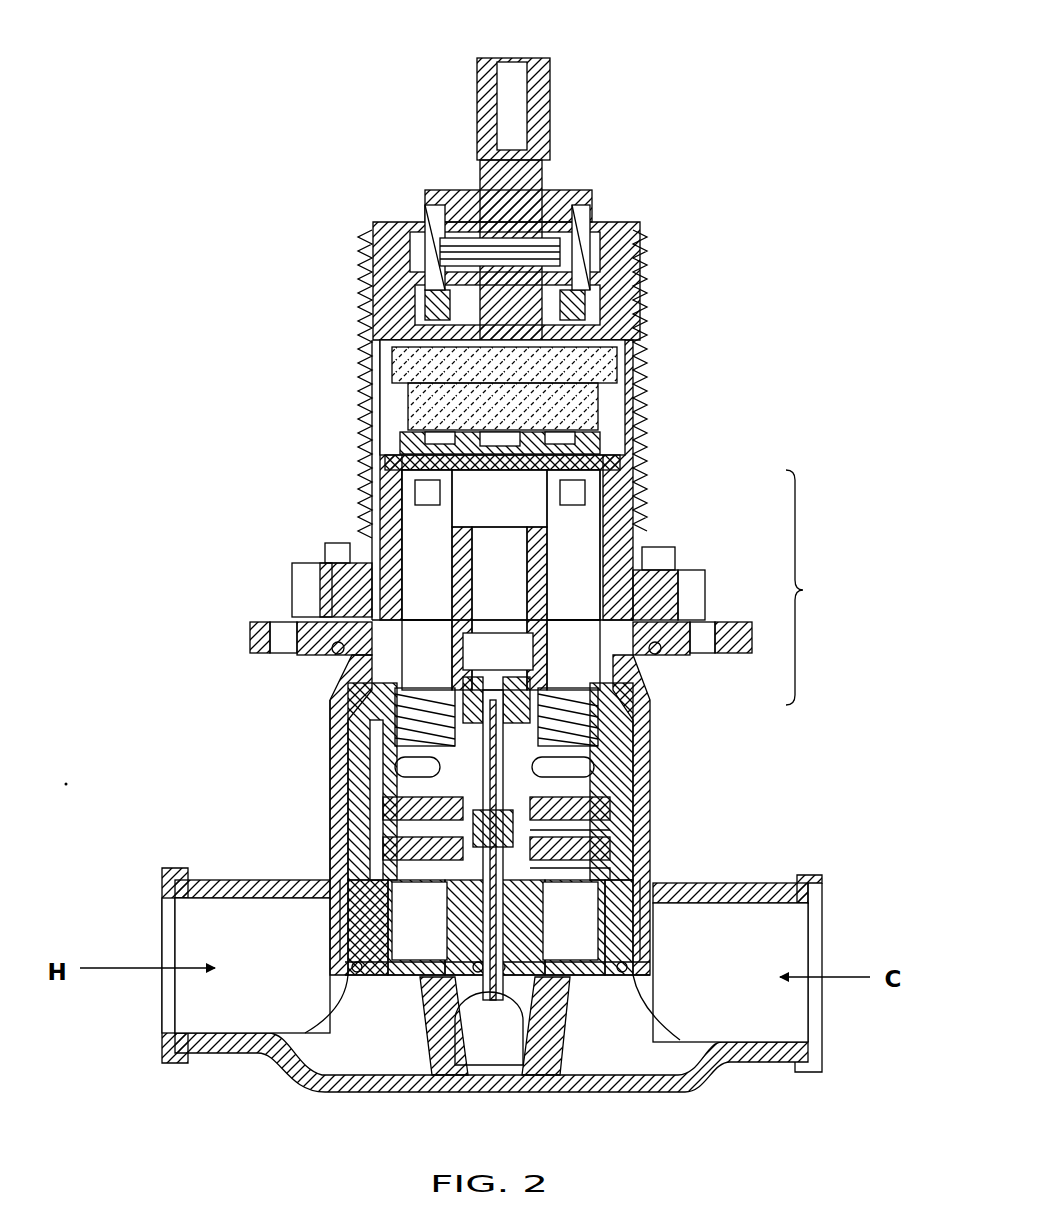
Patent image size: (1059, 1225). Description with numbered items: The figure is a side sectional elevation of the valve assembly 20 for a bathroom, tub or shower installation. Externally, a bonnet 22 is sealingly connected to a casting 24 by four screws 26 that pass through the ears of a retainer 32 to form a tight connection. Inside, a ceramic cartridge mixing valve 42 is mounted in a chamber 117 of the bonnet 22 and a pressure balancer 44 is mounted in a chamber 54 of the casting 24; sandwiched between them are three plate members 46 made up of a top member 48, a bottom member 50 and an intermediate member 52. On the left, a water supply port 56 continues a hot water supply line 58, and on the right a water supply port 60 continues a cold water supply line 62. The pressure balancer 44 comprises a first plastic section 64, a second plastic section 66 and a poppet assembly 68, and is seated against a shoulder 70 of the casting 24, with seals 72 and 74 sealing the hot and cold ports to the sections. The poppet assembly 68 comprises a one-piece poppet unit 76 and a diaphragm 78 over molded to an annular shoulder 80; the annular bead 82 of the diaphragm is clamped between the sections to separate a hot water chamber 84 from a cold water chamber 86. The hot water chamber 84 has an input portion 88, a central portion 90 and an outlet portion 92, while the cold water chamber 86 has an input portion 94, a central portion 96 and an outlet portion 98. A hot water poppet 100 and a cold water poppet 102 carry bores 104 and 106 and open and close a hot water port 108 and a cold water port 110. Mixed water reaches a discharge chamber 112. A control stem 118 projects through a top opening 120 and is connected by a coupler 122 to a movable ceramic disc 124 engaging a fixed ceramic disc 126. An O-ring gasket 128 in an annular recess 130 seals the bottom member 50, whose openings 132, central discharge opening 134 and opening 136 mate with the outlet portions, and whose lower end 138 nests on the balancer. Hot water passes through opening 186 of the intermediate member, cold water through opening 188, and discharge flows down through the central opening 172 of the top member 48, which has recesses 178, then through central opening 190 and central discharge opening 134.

The valve assembly 20 is at (655, 116).
The bonnet 22 is at (690, 605).
The casting 24 is at (692, 1096).
The screws 26 is at (335, 550).
The retainer 32 is at (293, 578).
The mixing valve 42 is at (636, 292).
The pressure balancer 44 is at (652, 797).
The plate members 46 is at (810, 587).
The top member 48 is at (637, 493).
The bottom member 50 is at (655, 692).
The intermediate member 52 is at (645, 548).
The chamber 54 is at (612, 855).
The water supply port 56 is at (366, 1051).
The water supply line 58 is at (168, 1046).
The water supply port 60 is at (618, 1051).
The water supply line 62 is at (824, 1055).
The first plastic section 64 is at (332, 775).
The second plastic section 66 is at (642, 718).
The poppet assembly 68 is at (612, 820).
The shoulder 70 is at (358, 982).
The seal 72 is at (335, 965).
The seal 74 is at (655, 975).
The poppet unit 76 is at (575, 995).
The diaphragm 78 is at (470, 1000).
The annular shoulder 80 is at (338, 927).
The annular bead 82 is at (545, 1012).
The hot water chamber 84 is at (407, 933).
The cold water chamber 86 is at (547, 933).
The input portion 88 is at (352, 963).
The central portion 90 is at (375, 830).
The outlet portion 92 is at (409, 671).
The input portion 94 is at (640, 945).
The central portion 96 is at (612, 866).
The outlet portion 98 is at (556, 671).
The hot water poppet 100 is at (384, 855).
The cold water poppet 102 is at (656, 918).
The bore 104 is at (386, 820).
The bore 106 is at (612, 832).
The hot water port 108 is at (400, 790).
The cold water port 110 is at (608, 777).
The discharge chamber 112 is at (470, 1063).
The chamber 117 is at (642, 325).
The control stem 118 is at (550, 115).
The top opening 120 is at (578, 210).
The coupler 122 is at (430, 236).
The movable ceramic disc 124 is at (396, 362).
The fixed ceramic disc 126 is at (614, 395).
The O-ring gasket 128 is at (322, 656).
The annular recess 130 is at (300, 630).
The opening 132 is at (403, 645).
The central discharge opening 134 is at (492, 655).
The opening 136 is at (552, 645).
The lower end 138 is at (660, 714).
The central opening 172 is at (480, 505).
The recesses 178 is at (398, 437).
The opening 186 is at (407, 595).
The opening 188 is at (551, 575).
The central opening 190 is at (480, 560).